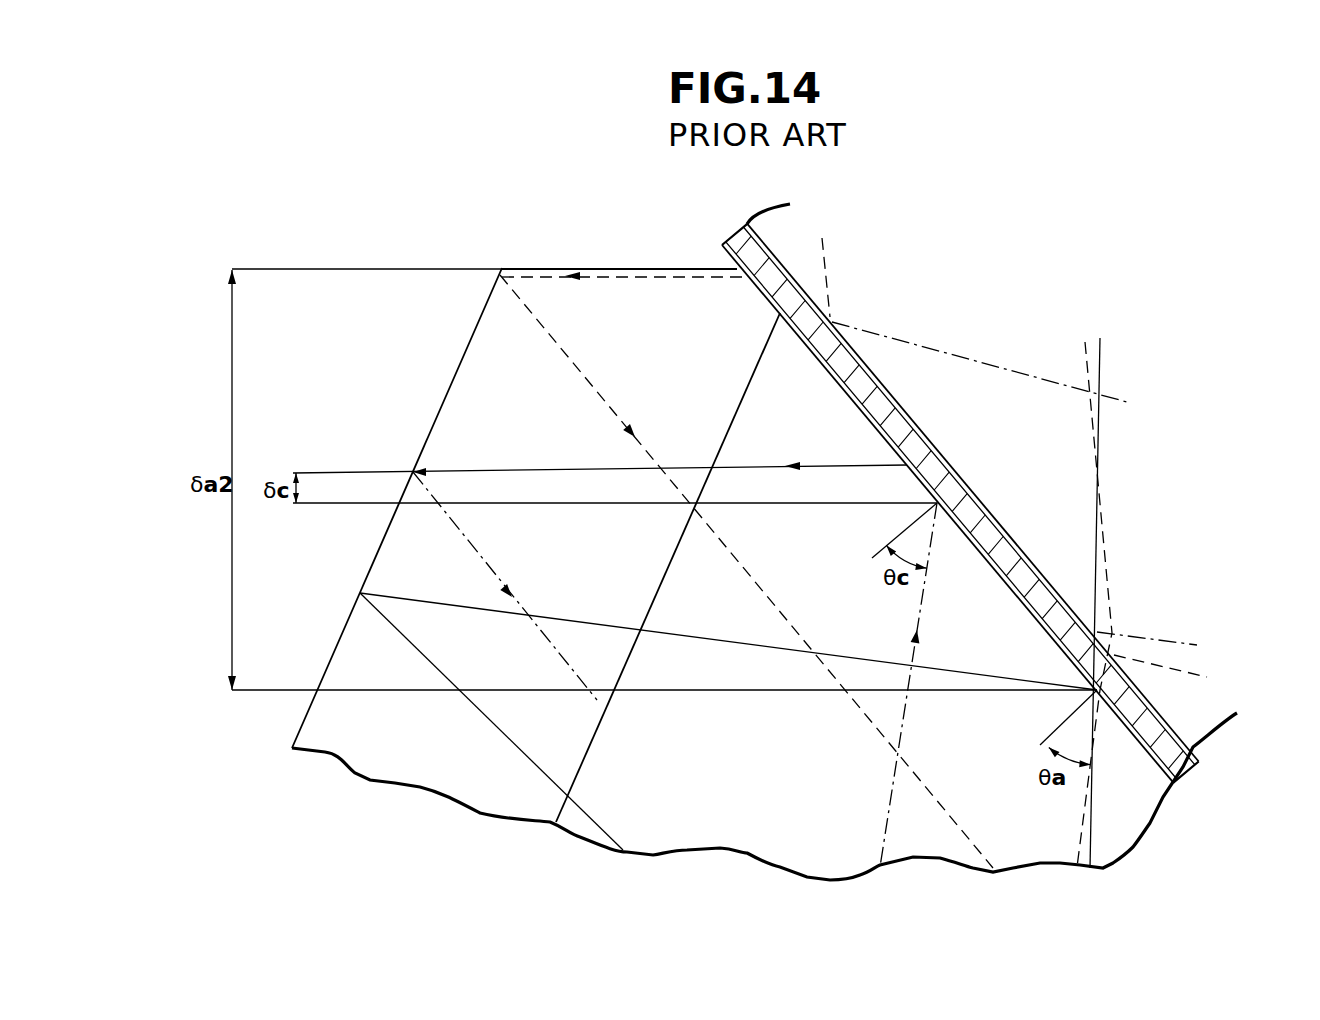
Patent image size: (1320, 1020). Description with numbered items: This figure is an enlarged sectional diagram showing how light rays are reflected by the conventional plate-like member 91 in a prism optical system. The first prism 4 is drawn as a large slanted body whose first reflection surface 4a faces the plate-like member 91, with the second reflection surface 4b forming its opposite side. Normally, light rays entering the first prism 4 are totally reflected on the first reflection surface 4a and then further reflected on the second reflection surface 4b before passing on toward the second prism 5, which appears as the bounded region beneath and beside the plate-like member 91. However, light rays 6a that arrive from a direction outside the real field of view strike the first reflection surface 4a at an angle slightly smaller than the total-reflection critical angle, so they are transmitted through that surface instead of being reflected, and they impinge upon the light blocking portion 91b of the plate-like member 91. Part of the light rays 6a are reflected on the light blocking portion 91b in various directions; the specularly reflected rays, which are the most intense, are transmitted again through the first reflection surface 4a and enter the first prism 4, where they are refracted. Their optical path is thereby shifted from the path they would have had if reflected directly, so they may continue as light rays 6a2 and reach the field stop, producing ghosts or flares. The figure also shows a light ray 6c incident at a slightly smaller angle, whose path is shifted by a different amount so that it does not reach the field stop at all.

The first prism 4 is at (645, 545).
The first reflection surface 4a is at (987, 563).
The second reflection surface 4b is at (440, 425).
The second prism 5 is at (1197, 703).
The light rays 6a is at (1075, 857).
The light rays 6a2 is at (607, 278).
The light ray 6c is at (483, 557).
The plate-like member 91 is at (971, 537).
The light blocking portion 91b is at (1138, 742).